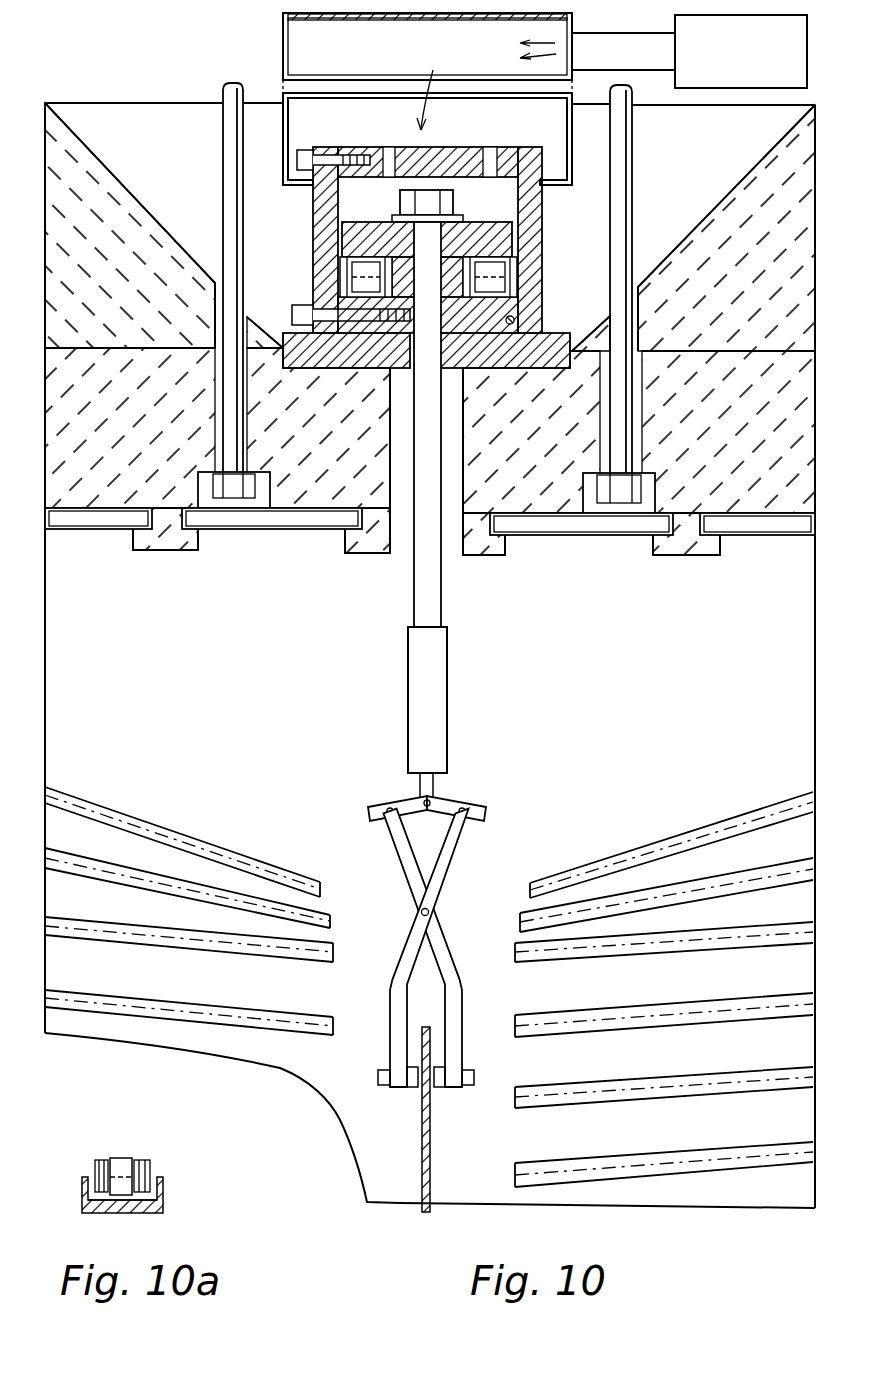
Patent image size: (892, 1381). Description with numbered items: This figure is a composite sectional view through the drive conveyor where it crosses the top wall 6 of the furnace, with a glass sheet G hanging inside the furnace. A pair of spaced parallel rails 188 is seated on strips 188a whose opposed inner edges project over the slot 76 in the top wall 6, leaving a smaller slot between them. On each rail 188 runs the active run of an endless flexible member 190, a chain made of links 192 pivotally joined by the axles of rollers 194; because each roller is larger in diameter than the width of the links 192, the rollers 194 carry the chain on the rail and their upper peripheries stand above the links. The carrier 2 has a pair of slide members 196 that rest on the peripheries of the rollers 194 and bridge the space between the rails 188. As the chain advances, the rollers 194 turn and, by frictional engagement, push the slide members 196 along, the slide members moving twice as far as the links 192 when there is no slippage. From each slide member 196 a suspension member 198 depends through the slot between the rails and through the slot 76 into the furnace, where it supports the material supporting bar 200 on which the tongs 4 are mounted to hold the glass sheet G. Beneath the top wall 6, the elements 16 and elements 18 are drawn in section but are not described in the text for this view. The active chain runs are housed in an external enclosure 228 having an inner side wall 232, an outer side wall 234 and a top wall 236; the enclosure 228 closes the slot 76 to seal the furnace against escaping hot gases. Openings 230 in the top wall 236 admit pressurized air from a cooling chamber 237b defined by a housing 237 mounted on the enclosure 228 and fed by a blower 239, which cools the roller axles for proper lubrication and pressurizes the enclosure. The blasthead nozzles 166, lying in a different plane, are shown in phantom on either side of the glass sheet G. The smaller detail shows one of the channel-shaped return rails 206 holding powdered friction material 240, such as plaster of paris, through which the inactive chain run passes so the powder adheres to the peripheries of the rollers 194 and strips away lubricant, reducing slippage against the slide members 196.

In FIG. 10, the carrier 2 is at (466, 758).
In FIG. 10, the tongs 4 is at (437, 882).
In FIG. 10, the top wall of the furnace 6 is at (736, 352).
In FIG. 10, the support pillar 16 is at (170, 540).
In FIG. 10, the support plate 18 is at (268, 542).
In FIG. 10, the slot 76 is at (450, 482).
In FIG. 10, the blasthead nozzles 166 is at (578, 842).
In FIG. 10, the rails 188 is at (505, 330).
In FIG. 10, the strips 188a is at (290, 370).
In FIG. 10, the endless flexible members 190 is at (325, 259).
In FIG. 10, the links 192 is at (350, 286).
In FIG. 10, the rollers 194 is at (366, 258).
In FIG. 10A, the rollers 194 is at (117, 1170).
In FIG. 10, the slide members 196 is at (495, 232).
In FIG. 10, the suspension member 198 is at (430, 440).
In FIG. 10, the material supporting bar 200 is at (418, 733).
In FIG. 10A, the channel-shaped return rails 206 is at (157, 1212).
In FIG. 10, the external enclosure 228 is at (435, 89).
In FIG. 10, the openings 230 is at (388, 156).
In FIG. 10, the inner side wall 232 is at (465, 363).
In FIG. 10, the outer side wall 234 is at (322, 214).
In FIG. 10, the top wall of the enclosure 236 is at (468, 130).
In FIG. 10, the housing 237 is at (283, 20).
In FIG. 10, the cooling chamber 237b is at (318, 56).
In FIG. 10, the blower 239 is at (752, 75).
In FIG. 10A, the powdered friction material 240 is at (82, 1200).
In FIG. 10, the glass sheet G is at (432, 1172).